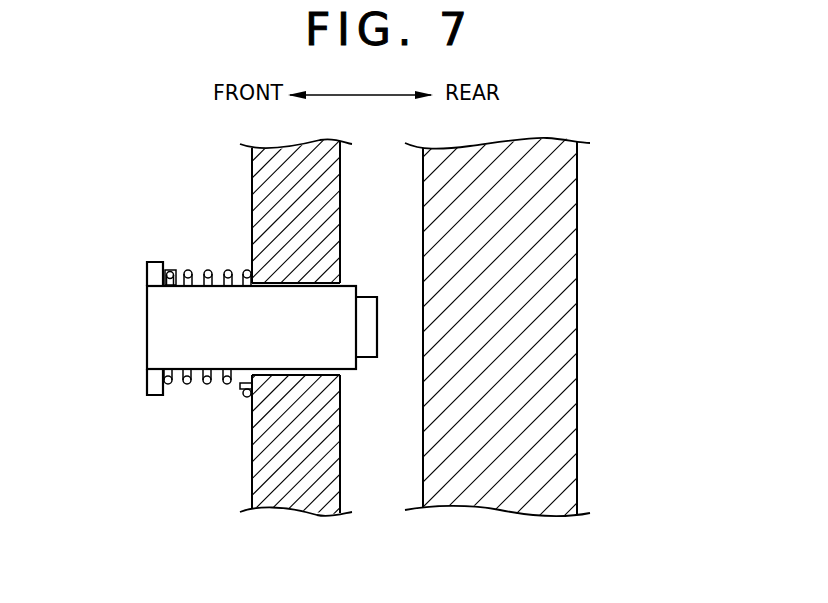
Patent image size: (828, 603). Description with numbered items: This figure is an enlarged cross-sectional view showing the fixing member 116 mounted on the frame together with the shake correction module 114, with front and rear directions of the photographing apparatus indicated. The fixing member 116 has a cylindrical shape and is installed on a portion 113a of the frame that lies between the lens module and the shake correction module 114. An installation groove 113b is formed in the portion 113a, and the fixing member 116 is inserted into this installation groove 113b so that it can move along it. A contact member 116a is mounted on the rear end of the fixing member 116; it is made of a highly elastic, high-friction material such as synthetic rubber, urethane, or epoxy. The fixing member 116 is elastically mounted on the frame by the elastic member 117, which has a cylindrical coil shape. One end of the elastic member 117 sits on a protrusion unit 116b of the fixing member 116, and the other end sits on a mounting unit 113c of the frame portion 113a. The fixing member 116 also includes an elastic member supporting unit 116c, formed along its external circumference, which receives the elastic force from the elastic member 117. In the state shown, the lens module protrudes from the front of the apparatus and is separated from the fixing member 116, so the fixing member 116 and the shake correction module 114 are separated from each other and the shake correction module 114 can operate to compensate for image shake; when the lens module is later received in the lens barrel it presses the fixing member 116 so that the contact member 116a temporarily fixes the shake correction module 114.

The portion of the frame 113a is at (293, 500).
The installation groove 113b is at (293, 371).
The mounting unit 113c is at (245, 397).
The shake correction module 114 is at (568, 305).
The fixing member 116 is at (150, 326).
The contact member 116a is at (368, 328).
The protrusion unit 116b is at (171, 264).
The elastic member supporting unit 116c is at (150, 270).
The elastic member 117 is at (182, 383).